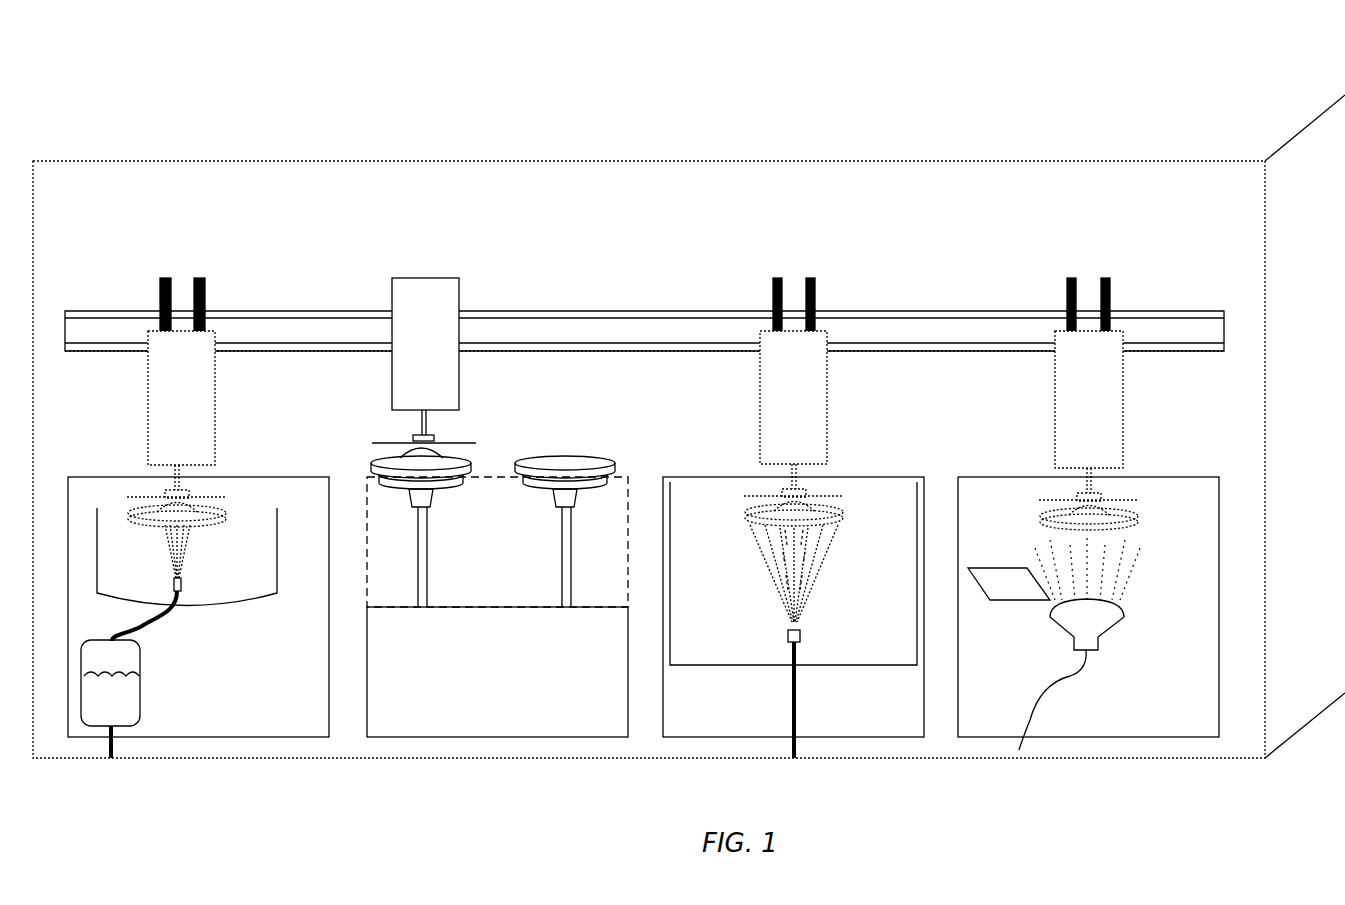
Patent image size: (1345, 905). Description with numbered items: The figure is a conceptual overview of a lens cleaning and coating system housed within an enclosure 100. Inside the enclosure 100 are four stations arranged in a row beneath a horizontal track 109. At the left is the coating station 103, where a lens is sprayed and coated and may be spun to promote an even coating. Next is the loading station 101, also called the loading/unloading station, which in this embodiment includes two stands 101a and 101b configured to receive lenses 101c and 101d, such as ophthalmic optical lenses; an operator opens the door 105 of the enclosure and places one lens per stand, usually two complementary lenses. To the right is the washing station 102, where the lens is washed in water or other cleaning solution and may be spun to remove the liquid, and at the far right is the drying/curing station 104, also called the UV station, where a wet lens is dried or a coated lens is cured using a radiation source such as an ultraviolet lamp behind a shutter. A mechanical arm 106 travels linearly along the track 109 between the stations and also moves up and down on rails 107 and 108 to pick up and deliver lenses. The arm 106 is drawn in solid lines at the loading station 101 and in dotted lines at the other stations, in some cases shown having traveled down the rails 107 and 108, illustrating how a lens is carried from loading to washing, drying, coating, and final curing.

The enclosure 100 is at (440, 104).
The loading station 101 is at (506, 560).
The stand 101a is at (445, 557).
The stand 101b is at (542, 557).
The lens 101c is at (463, 460).
The lens 101d is at (561, 463).
The washing station 102 is at (793, 611).
The coating station 103 is at (198, 611).
The drying/curing station 104 is at (1088, 609).
The door 105 is at (1305, 168).
The mechanical arm 106 is at (428, 256).
The rail 107 is at (160, 254).
The rail 108 is at (193, 250).
The track 109 is at (1010, 311).